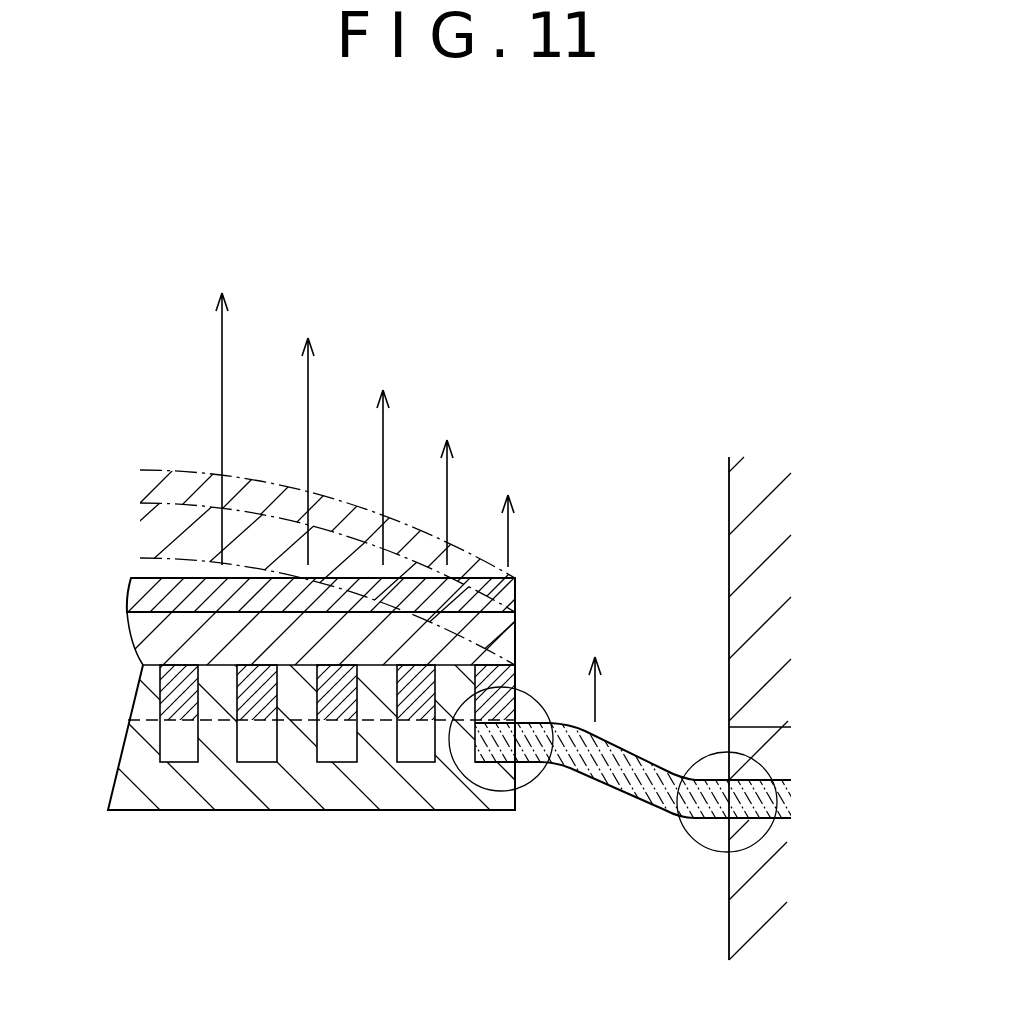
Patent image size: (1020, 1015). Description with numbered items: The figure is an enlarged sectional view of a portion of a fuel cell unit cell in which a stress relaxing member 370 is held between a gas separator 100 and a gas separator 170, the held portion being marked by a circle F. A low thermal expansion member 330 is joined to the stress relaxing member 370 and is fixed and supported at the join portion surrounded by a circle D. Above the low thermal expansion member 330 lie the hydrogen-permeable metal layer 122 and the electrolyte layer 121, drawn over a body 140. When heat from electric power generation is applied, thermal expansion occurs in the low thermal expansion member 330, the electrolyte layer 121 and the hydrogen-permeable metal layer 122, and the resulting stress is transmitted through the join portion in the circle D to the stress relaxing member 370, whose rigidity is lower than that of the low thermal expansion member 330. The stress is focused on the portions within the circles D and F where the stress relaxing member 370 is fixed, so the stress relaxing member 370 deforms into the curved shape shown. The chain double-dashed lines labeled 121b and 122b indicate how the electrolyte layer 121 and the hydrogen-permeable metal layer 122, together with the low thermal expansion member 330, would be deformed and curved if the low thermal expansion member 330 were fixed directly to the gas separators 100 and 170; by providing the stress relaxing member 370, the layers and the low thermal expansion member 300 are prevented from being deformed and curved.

The gas separator 100 is at (775, 573).
The electrolyte layer 121 is at (138, 595).
The first layer in deformed (bent) state 121b is at (160, 468).
The hydrogen-permeable metal layer 122 is at (148, 640).
The second layer in deformed (bent) state 122b is at (153, 535).
The body / substrate with electrodes 140 is at (262, 787).
The gas separator 170 is at (777, 867).
The low thermal expansion member 300 is at (778, 752).
The low thermal expansion member 330 is at (170, 694).
The stress relaxing member 370 is at (605, 777).
The circle D is at (530, 693).
The circle F is at (690, 840).